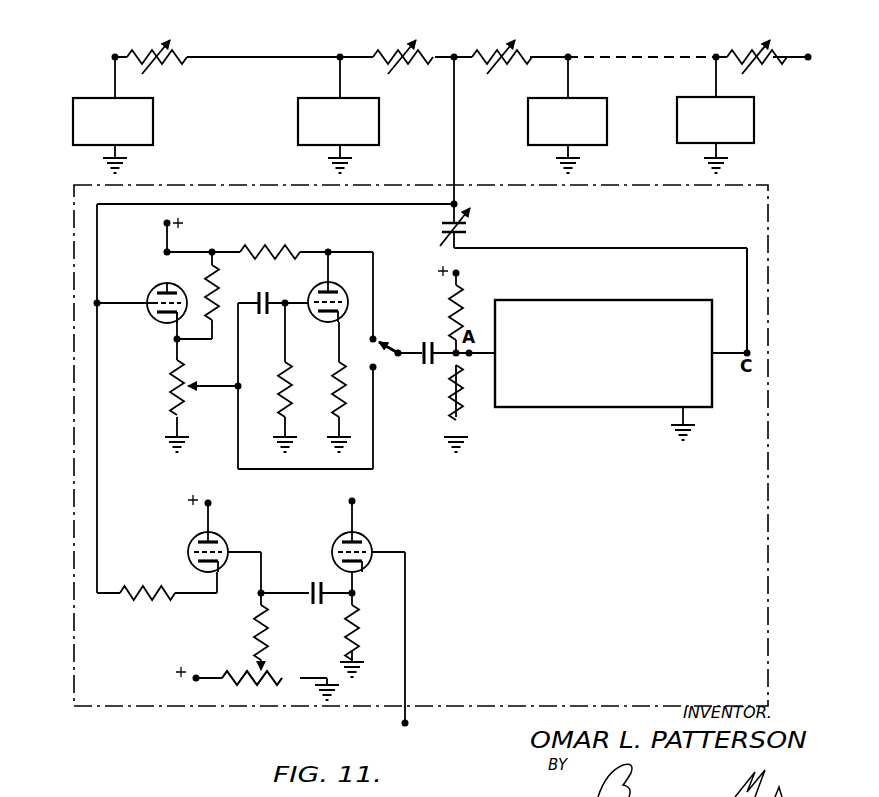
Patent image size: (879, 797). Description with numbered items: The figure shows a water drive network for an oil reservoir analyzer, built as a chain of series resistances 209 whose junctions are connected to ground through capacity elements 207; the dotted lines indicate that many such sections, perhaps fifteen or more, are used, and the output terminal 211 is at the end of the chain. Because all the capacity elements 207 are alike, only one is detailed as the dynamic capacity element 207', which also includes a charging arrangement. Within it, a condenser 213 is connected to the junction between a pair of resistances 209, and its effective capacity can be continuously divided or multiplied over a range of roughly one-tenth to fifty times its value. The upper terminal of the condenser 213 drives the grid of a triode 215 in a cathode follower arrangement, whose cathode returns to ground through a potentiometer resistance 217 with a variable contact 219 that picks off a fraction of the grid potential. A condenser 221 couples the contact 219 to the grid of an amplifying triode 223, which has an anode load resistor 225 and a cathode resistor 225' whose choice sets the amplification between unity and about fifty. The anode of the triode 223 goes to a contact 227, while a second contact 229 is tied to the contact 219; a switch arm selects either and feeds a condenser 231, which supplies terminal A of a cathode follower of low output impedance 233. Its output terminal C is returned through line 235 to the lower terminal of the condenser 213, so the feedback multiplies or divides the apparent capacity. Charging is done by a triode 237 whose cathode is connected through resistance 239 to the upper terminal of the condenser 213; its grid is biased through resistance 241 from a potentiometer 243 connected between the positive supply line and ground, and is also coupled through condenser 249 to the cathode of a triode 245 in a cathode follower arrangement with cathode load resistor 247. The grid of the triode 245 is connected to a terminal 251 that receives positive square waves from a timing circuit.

The capacity element 207 is at (404, 119).
The dynamic capacity element 207' is at (398, 444).
The resistance 209 is at (142, 50).
The output terminal 211 is at (807, 53).
The condenser 213 is at (469, 233).
The triode 215 is at (150, 286).
The potentiometer resistance 217 is at (170, 400).
The variable contact 219 is at (205, 386).
The condenser 221 is at (259, 292).
The amplifying triode 223 is at (345, 289).
The anode load resistor 225 is at (276, 235).
The cathode resistor 225' is at (321, 379).
The contact 227 is at (374, 336).
The contact 229 is at (376, 370).
The condenser 231 is at (420, 345).
The cathode follower of low output impedance 233 is at (566, 407).
The line 235 is at (648, 248).
The triode 237 is at (222, 539).
The resistance 239 is at (149, 586).
The resistance 241 is at (255, 639).
The potentiometer 243 is at (261, 686).
The triode 245 is at (368, 539).
The cathode load resistor 247 is at (346, 626).
The condenser 249 is at (310, 584).
The terminal 251 is at (403, 723).